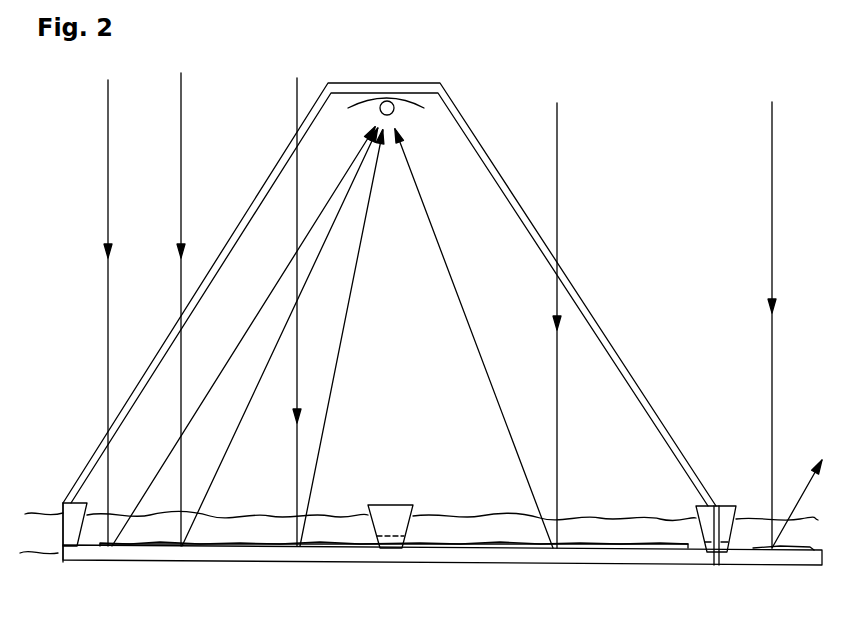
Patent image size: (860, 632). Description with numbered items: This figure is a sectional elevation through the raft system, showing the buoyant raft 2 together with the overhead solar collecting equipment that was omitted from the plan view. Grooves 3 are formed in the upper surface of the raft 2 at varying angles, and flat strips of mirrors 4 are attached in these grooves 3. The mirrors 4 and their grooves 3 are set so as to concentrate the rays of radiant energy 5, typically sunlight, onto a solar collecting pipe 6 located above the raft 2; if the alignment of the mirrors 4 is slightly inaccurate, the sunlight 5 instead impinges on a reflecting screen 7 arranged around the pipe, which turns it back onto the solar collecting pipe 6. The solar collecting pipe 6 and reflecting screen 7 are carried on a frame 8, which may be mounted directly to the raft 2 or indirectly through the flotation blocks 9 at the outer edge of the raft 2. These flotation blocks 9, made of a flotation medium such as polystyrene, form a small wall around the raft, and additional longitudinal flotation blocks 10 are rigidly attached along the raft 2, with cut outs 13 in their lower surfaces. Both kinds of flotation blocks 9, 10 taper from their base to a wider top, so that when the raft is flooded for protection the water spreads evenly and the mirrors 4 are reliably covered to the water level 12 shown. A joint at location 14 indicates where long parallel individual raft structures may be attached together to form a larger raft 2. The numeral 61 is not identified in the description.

The buoyant raft 2 is at (25, 514).
The grooves 3 is at (528, 556).
The mirrors 4 is at (452, 545).
The rays of radiant energy 5 is at (110, 212).
The solar collecting pipe 6 is at (396, 111).
The reflecting screen 7 is at (353, 108).
The frame 8 is at (312, 108).
The flotation blocks 9 is at (63, 503).
The longitudinal flotation blocks 10 is at (402, 525).
The water level 12 is at (270, 508).
The cut outs 13 is at (372, 552).
The attachment location 14 is at (719, 565).
The edge wall 61 is at (63, 561).